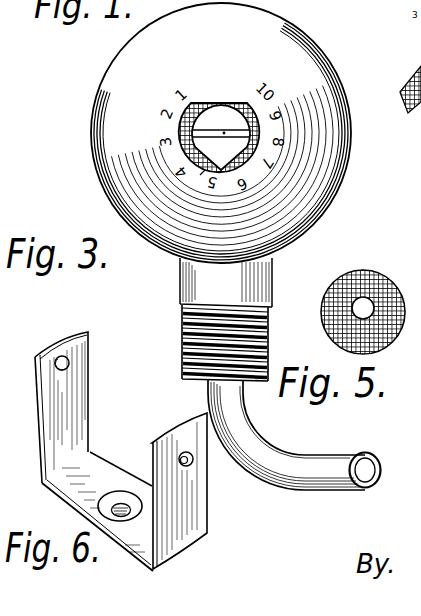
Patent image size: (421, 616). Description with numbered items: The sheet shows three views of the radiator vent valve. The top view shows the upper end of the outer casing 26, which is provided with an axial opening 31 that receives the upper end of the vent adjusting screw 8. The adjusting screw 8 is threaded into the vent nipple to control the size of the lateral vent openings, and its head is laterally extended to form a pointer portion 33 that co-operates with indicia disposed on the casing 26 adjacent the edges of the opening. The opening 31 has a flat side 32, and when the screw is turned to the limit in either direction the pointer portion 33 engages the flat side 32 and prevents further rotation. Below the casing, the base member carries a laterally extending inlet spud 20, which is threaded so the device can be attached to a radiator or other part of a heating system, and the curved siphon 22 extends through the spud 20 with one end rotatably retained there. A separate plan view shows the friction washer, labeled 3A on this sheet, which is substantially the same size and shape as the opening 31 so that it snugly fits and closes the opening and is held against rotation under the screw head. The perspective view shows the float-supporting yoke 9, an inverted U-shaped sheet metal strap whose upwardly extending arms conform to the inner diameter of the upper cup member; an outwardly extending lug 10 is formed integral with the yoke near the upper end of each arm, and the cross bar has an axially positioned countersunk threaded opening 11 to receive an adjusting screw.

In FIG. 3, the outer casing 26 is at (313, 46).
In FIG. 3, the axial opening 31 is at (268, 150).
In FIG. 3, the flat side 32 is at (224, 102).
In FIG. 3, the adjusting screw 8 is at (223, 118).
In FIG. 3, the shaft disk 3A is at (260, 134).
In FIG. 5, the shaft disk 3A is at (340, 329).
In FIG. 3, the pointer portion 33 is at (204, 172).
In FIG. 3, the inlet spud 20 is at (181, 284).
In FIG. 3, the siphon 22 is at (290, 464).
In FIG. 6, the yoke 9 is at (108, 454).
In FIG. 6, the lug 10 is at (59, 352).
In FIG. 6, the countersunk threaded opening 11 is at (121, 518).